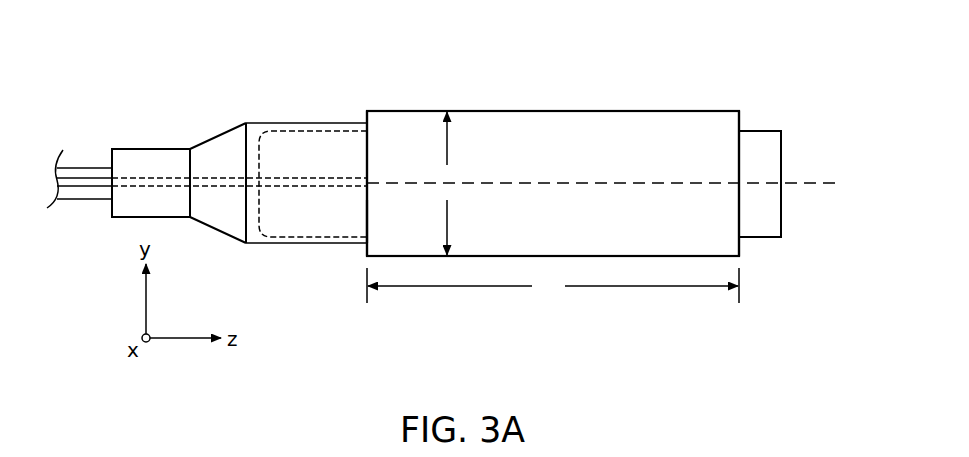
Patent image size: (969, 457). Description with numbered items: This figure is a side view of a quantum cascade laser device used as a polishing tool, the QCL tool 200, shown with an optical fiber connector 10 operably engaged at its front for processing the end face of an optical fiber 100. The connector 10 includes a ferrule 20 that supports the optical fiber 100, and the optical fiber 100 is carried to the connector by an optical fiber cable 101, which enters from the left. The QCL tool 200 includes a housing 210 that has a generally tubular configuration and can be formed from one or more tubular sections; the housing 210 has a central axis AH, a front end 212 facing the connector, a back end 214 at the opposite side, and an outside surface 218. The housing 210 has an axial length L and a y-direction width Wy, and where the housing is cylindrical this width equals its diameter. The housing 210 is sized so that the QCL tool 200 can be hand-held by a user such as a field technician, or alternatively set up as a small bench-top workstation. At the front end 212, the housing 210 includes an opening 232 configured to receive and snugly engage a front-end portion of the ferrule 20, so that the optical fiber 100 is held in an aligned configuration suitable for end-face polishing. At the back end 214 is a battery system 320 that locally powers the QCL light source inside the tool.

The QCL tool 200 is at (163, 48).
The optical fiber connector 10 is at (173, 112).
The optical fiber 100 is at (92, 177).
The optical fiber cable 101 is at (97, 186).
The ferrule 20 is at (302, 130).
The housing 210 is at (643, 65).
The front end 212 is at (367, 111).
The back end 214 is at (739, 115).
The outside surface 218 is at (506, 111).
The opening 232 is at (363, 219).
The battery system 320 is at (762, 237).
The central axis AH is at (813, 183).
The y-direction width Wy is at (445, 183).
The axial length L is at (553, 285).